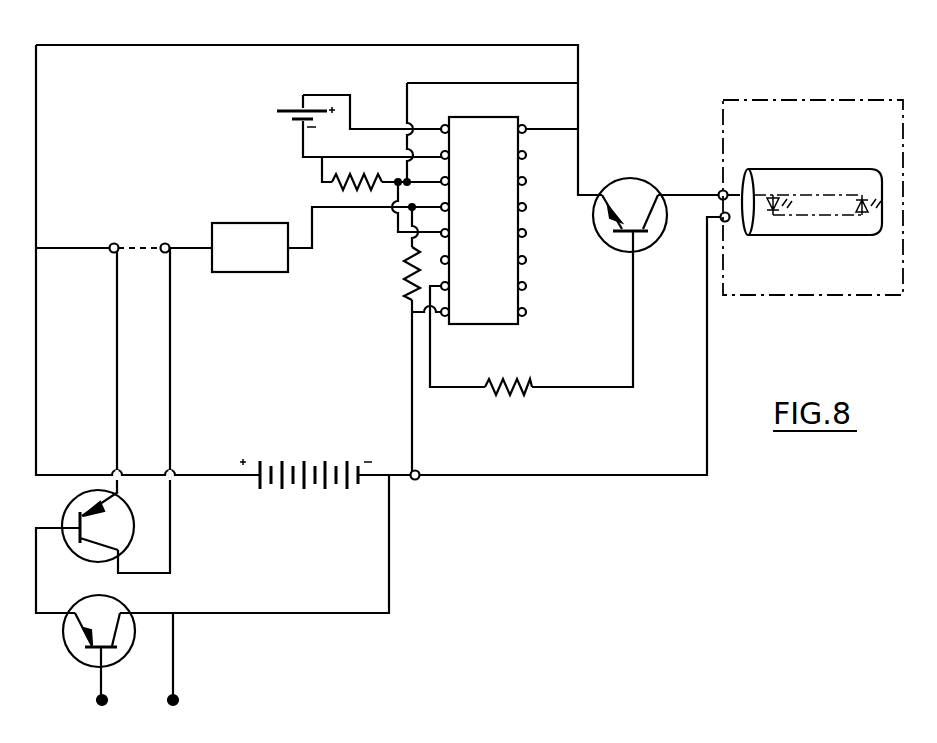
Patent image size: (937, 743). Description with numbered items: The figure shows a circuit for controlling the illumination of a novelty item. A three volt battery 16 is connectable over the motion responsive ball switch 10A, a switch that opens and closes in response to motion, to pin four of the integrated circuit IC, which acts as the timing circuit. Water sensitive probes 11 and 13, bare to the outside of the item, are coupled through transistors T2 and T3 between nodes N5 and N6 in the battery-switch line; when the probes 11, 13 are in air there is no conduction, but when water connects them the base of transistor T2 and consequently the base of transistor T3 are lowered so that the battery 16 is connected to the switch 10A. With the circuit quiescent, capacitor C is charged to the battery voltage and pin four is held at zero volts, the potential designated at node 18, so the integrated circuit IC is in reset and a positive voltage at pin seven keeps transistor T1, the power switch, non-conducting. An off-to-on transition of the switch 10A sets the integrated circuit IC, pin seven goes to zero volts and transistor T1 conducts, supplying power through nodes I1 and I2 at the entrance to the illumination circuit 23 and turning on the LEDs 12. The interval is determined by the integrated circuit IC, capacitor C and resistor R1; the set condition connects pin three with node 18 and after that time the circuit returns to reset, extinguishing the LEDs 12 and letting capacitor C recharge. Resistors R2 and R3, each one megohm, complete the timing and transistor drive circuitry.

The capacitor C is at (290, 103).
The resistor R1 is at (331, 183).
The resistor R2 is at (407, 268).
The resistor R3 is at (510, 382).
The integrated circuit IC is at (525, 281).
The transistor T1 is at (627, 180).
The transistor T2 is at (130, 630).
The transistor T3 is at (73, 502).
The node N5 is at (114, 234).
The node N6 is at (164, 234).
The ball switch 10A is at (252, 273).
The battery 16 is at (301, 492).
The node 18 is at (417, 482).
The probe 11 is at (108, 715).
The probe 13 is at (179, 715).
The node I1 is at (719, 188).
The node I2 is at (728, 225).
The light emitting diode 12 is at (862, 187).
The illumination circuit 23 is at (794, 98).